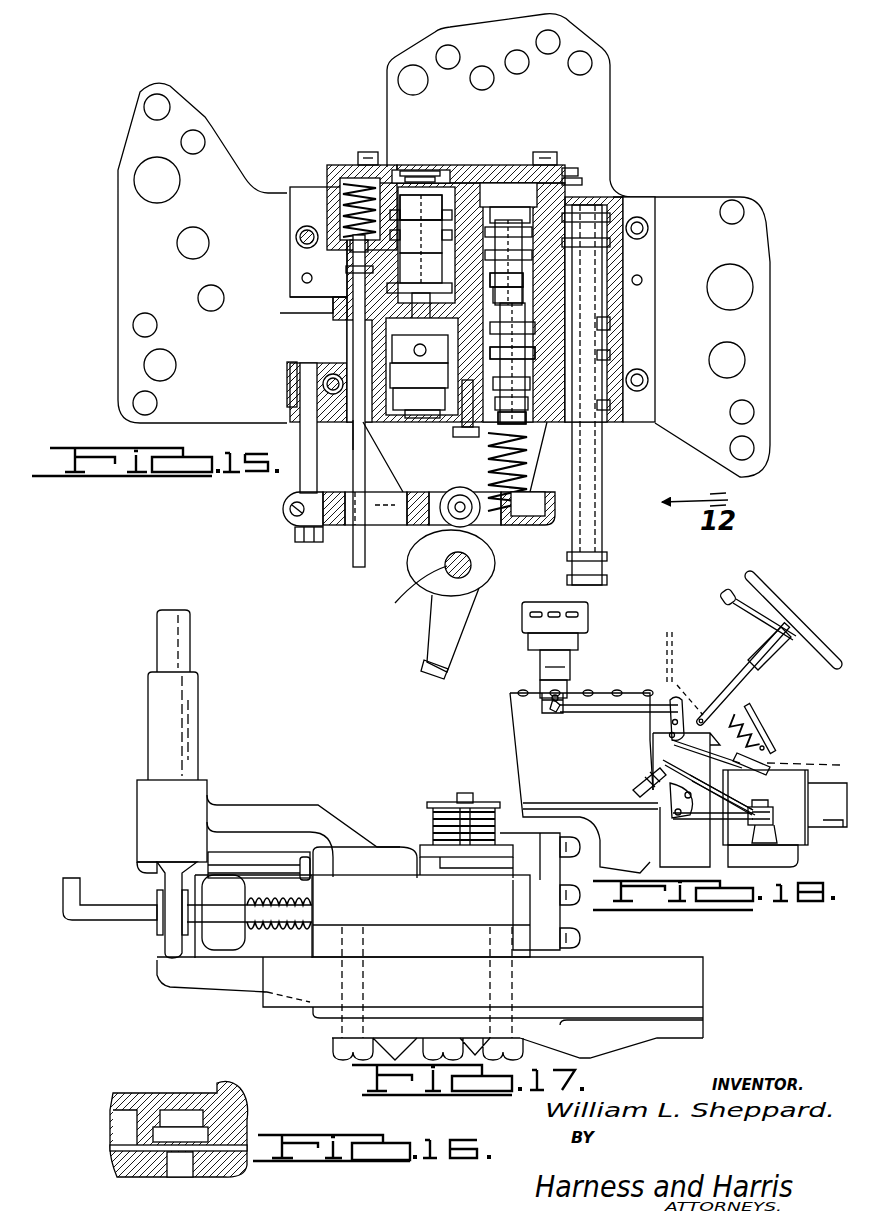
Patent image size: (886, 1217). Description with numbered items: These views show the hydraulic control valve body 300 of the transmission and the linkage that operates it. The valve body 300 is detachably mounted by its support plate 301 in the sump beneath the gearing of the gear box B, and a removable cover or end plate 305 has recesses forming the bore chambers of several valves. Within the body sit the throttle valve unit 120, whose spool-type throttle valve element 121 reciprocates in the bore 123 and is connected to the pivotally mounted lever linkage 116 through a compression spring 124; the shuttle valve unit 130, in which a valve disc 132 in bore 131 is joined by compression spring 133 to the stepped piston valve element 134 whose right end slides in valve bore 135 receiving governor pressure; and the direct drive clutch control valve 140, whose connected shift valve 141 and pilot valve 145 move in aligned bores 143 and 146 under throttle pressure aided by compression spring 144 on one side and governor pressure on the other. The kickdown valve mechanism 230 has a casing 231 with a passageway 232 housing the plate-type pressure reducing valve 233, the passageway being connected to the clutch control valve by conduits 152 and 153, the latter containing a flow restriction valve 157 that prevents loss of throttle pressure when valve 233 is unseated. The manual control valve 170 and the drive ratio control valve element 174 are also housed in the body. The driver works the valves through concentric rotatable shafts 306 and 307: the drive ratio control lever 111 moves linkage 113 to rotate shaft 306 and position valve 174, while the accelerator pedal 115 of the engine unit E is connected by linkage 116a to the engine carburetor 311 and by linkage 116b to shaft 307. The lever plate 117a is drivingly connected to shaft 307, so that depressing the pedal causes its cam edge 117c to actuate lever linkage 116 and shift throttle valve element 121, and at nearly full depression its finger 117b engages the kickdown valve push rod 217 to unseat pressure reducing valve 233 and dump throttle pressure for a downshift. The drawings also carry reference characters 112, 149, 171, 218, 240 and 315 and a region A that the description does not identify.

In FIG. 18, the drive ratio control lever 111 is at (738, 612).
In FIG. 18, the lever arm 112 is at (755, 665).
In FIG. 18, the linkage 113 is at (650, 790).
In FIG. 18, the accelerator pedal 115 is at (760, 707).
In FIG. 15, the lever linkage 116 is at (383, 548).
In FIG. 18, the lever linkage 116 is at (676, 690).
In FIG. 17, the lever linkage 116 is at (208, 935).
In FIG. 18, the linkage 116a is at (605, 726).
In FIG. 18, the linkage 116b is at (733, 790).
In FIG. 15, the lever plate 117a is at (472, 590).
In FIG. 17, the lever plate 117a is at (88, 912).
In FIG. 15, the finger element 117b is at (425, 665).
In FIG. 15, the cam surface 117c is at (480, 530).
In FIG. 15, the throttle valve unit 120 is at (498, 445).
In FIG. 15, the throttle valve element 121 is at (511, 363).
In FIG. 15, the bore 123 is at (530, 360).
In FIG. 15, the compression spring 124 is at (522, 297).
In FIG. 17, the compression spring 124 is at (248, 930).
In FIG. 15, the shuttle valve unit 130 is at (507, 175).
In FIG. 15, the bore 131 is at (505, 180).
In FIG. 15, the valve disc 132 is at (578, 170).
In FIG. 15, the compression spring 133 is at (582, 182).
In FIG. 15, the piston valve element 134 is at (490, 270).
In FIG. 15, the valve bore 135 is at (522, 278).
In FIG. 15, the direct drive clutch control valve 140 is at (466, 425).
In FIG. 15, the shift valve 141 is at (421, 253).
In FIG. 15, the bore 143 is at (432, 176).
In FIG. 15, the compression spring 144 is at (418, 170).
In FIG. 15, the pilot valve 145 is at (422, 366).
In FIG. 15, the bore 146 is at (410, 415).
In FIG. 15, the nut 149 is at (440, 218).
In FIG. 16, the conduit 152 is at (182, 1170).
In FIG. 16, the branch conduit 153 is at (178, 1115).
In FIG. 16, the flow restriction valve 157 is at (195, 1137).
In FIG. 15, the manual control valve 170 is at (600, 425).
In FIG. 15, the plate 171 is at (600, 290).
In FIG. 17, the drive ratio control valve element 174 is at (157, 930).
In FIG. 15, the kickdown valve push rod 217 is at (345, 548).
In FIG. 15, the rod 218 is at (353, 430).
In FIG. 15, the kickdown valve mechanism 230 is at (335, 175).
In FIG. 15, the casing 231 is at (340, 170).
In FIG. 15, the passageway 232 is at (340, 205).
In FIG. 15, the pressure reducing valve 233 is at (352, 240).
In FIG. 17, the spring assembly 240 is at (440, 795).
In FIG. 15, the valve body 300 is at (632, 196).
In FIG. 18, the valve body 300 is at (778, 812).
In FIG. 17, the valve body 300 is at (388, 820).
In FIG. 16, the valve body 300 is at (145, 1090).
In FIG. 17, the support plate 301 is at (703, 953).
In FIG. 15, the cover plate 305 is at (372, 150).
In FIG. 17, the cover plate 305 is at (570, 917).
In FIG. 17, the rotatable shaft 306 is at (185, 710).
In FIG. 15, the rotatable shaft 307 is at (413, 589).
In FIG. 17, the rotatable shaft 307 is at (180, 637).
In FIG. 18, the engine carburetor 311 is at (568, 668).
In FIG. 18, the bracket 315 is at (768, 727).
In FIG. 18, the chamber A is at (677, 832).
In FIG. 18, the gear box B is at (800, 780).
In FIG. 18, the engine unit E is at (585, 712).